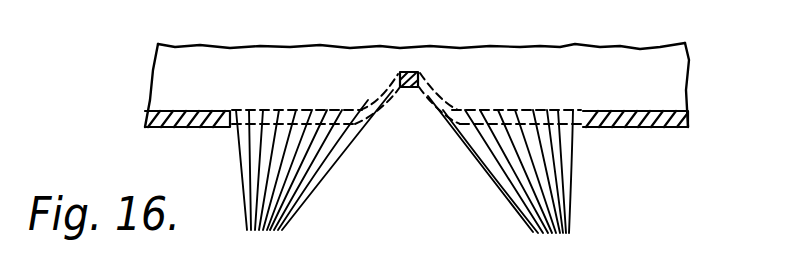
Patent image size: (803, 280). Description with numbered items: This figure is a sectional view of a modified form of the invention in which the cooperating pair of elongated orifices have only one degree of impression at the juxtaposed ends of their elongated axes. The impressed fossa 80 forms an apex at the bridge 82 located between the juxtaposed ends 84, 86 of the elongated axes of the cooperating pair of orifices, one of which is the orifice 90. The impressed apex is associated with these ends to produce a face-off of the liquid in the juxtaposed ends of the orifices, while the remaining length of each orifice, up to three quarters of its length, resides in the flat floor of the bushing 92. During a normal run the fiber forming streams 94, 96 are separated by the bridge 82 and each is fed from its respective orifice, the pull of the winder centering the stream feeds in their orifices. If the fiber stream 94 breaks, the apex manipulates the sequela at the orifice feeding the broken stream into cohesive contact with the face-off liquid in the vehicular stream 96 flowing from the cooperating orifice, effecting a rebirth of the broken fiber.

The impressed fossa 80 is at (437, 85).
The bridge 82 is at (410, 88).
The juxtaposed end of elongated axis 84 is at (420, 73).
The juxtaposed end of elongated axis 86 is at (398, 79).
The orifice 90 is at (310, 110).
The bushing 92 is at (645, 128).
The fiber forming stream 94 is at (567, 180).
The fiber forming stream 96 is at (298, 178).